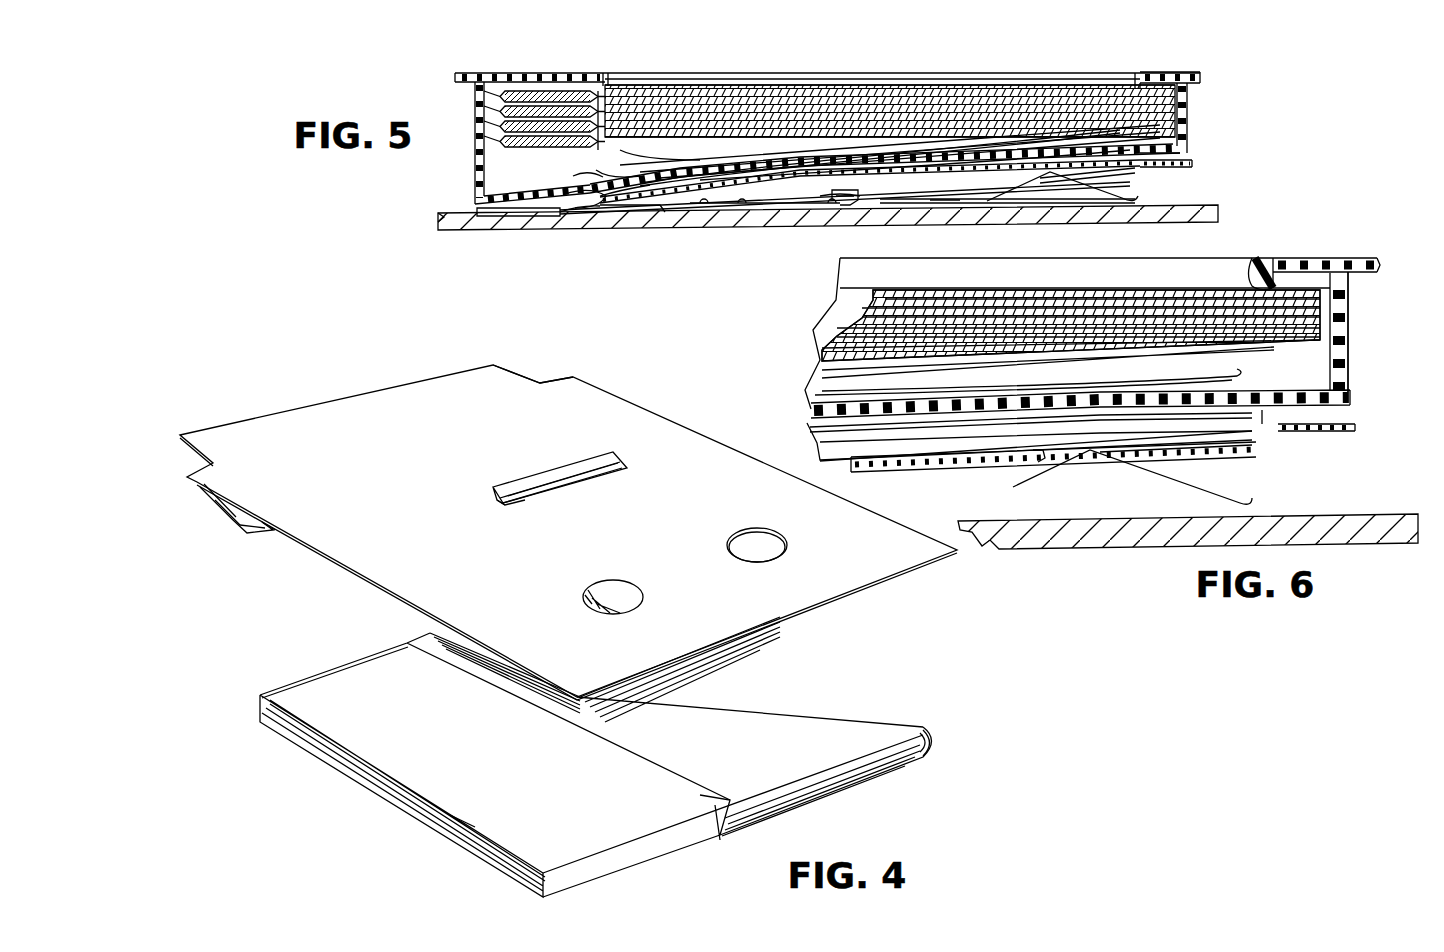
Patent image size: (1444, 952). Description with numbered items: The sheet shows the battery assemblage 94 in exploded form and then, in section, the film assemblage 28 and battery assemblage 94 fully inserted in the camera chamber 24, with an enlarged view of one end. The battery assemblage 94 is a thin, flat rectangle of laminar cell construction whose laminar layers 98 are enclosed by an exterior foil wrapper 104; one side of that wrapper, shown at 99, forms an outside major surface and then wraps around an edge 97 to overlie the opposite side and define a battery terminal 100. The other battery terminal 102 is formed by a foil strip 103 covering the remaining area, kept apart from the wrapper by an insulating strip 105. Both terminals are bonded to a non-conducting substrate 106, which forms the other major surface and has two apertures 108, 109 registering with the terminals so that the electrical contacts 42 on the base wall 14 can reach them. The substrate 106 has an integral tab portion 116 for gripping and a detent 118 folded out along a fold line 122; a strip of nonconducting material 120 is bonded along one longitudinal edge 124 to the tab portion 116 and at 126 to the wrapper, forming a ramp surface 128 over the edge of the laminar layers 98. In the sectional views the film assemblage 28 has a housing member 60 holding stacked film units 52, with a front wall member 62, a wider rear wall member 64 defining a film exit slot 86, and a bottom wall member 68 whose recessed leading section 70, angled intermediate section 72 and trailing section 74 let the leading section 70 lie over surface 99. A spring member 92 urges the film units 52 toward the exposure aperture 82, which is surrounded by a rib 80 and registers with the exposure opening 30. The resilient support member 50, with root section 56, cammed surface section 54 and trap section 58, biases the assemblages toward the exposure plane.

In FIG. 5, the base wall 14 is at (703, 224).
In FIG. 6, the base wall 14 is at (1110, 548).
In FIG. 5, the chamber 24 is at (1160, 199).
In FIG. 6, the chamber 24 is at (1314, 494).
In FIG. 5, the film assemblage 28 is at (709, 70).
In FIG. 6, the film assemblage 28 is at (1360, 302).
In FIG. 5, the exposure opening 30 is at (601, 71).
In FIG. 6, the exposure opening 30 is at (1300, 260).
In FIG. 5, the electrical contacts 42 is at (1086, 206).
In FIG. 6, the electrical contacts 42 is at (1140, 470).
In FIG. 5, the resilient projecting support member 50 is at (766, 192).
In FIG. 5, the film units 52 is at (800, 86).
In FIG. 6, the film units 52 is at (1118, 292).
In FIG. 5, the cammed surface section 54 is at (746, 187).
In FIG. 5, the root section 56 is at (662, 212).
In FIG. 5, the U-shaped trap section 58 is at (834, 197).
In FIG. 5, the housing member 60 is at (615, 72).
In FIG. 6, the housing member 60 is at (1268, 255).
In FIG. 5, the front wall member 62 is at (1190, 112).
In FIG. 6, the front wall member 62 is at (1350, 365).
In FIG. 5, the rear wall member 64 is at (476, 150).
In FIG. 5, the bottom wall member 68 is at (804, 192).
In FIG. 6, the bottom wall member 68 is at (975, 416).
In FIG. 5, the leading section 70 is at (722, 203).
In FIG. 6, the leading section 70 is at (1262, 436).
In FIG. 5, the intermediate section 72 is at (582, 212).
In FIG. 5, the trailing section 74 is at (520, 218).
In FIG. 5, the rib 80 is at (1150, 72).
In FIG. 6, the rib 80 is at (1280, 258).
In FIG. 5, the exposure aperture 82 is at (1128, 72).
In FIG. 6, the exposure aperture 82 is at (1250, 258).
In FIG. 5, the film exit slot 86 is at (478, 95).
In FIG. 5, the spring member 92 is at (1013, 108).
In FIG. 5, the battery assemblage 94 is at (1192, 172).
In FIG. 6, the battery assemblage 94 is at (1306, 440).
In FIG. 4, the battery assemblage 94 is at (320, 378).
In FIG. 4, the edge 97 is at (930, 732).
In FIG. 5, the laminar layers 98 is at (1010, 184).
In FIG. 6, the laminar layers 98 is at (1000, 445).
In FIG. 4, the laminar layers 98 is at (258, 700).
In FIG. 5, the outside major surface 99 is at (870, 162).
In FIG. 6, the outside major surface 99 is at (930, 415).
In FIG. 4, the outside major surface 99 is at (805, 800).
In FIG. 5, the battery terminal 100 is at (1088, 181).
In FIG. 6, the battery terminal 100 is at (1150, 465).
In FIG. 4, the battery terminal 100 is at (785, 690).
In FIG. 4, the battery terminal 102 is at (440, 790).
In FIG. 4, the foil strip 103 is at (600, 870).
In FIG. 4, the exterior foil wrapper 104 is at (820, 733).
In FIG. 4, the insulating strip 105 is at (718, 822).
In FIG. 5, the non-conducting substrate 106 is at (950, 208).
In FIG. 6, the non-conducting substrate 106 is at (915, 476).
In FIG. 4, the non-conducting substrate 106 is at (648, 436).
In FIG. 6, the aperture 108 is at (1046, 462).
In FIG. 4, the aperture 108 is at (748, 530).
In FIG. 4, the aperture 109 is at (588, 584).
In FIG. 5, the integral tab portion 116 is at (490, 201).
In FIG. 4, the integral tab portion 116 is at (440, 372).
In FIG. 5, the detent 118 is at (862, 205).
In FIG. 4, the detent 118 is at (541, 461).
In FIG. 5, the strip of nonconducting material 120 is at (580, 177).
In FIG. 4, the strip of nonconducting material 120 is at (242, 538).
In FIG. 4, the fold line 122 is at (572, 498).
In FIG. 5, the longitudinal edge 124 is at (601, 203).
In FIG. 4, the longitudinal edge 124 is at (200, 490).
In FIG. 5, the bond 126 is at (684, 167).
In FIG. 4, the bond 126 is at (268, 535).
In FIG. 5, the ramp surface 128 is at (609, 163).
In FIG. 4, the ramp surface 128 is at (222, 516).